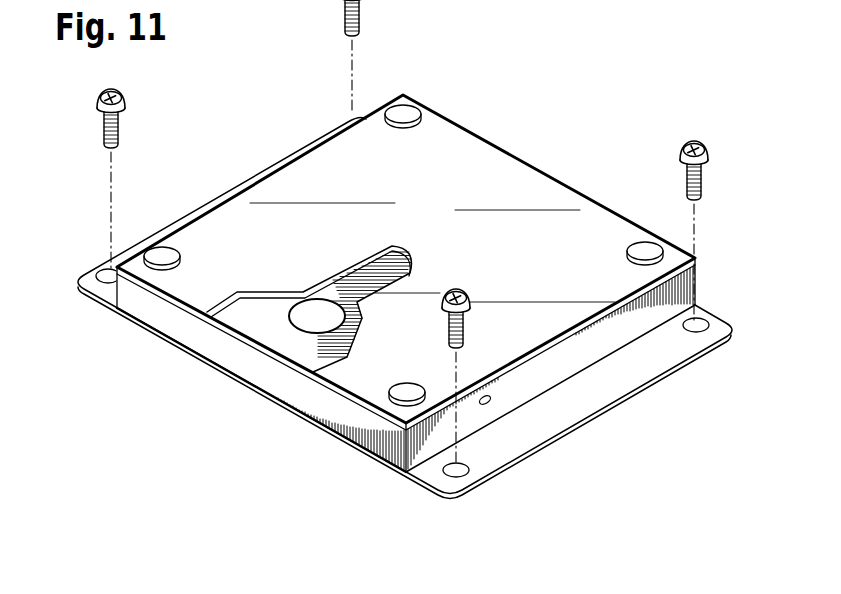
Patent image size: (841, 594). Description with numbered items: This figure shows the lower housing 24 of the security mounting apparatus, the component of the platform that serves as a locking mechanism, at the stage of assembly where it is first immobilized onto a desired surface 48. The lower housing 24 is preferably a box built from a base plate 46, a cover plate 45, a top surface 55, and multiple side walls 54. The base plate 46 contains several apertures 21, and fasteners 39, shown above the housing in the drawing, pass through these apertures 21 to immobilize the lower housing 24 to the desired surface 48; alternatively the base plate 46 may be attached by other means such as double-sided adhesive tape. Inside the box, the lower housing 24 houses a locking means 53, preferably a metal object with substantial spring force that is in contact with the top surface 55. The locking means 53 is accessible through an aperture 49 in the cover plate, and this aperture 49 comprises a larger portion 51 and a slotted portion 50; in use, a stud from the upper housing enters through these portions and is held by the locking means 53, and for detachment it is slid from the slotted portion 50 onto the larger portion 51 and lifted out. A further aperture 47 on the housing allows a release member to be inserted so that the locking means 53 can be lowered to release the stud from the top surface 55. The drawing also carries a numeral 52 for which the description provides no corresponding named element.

The lower housing 24 is at (645, 41).
The cover plate 45 is at (474, 162).
The fasteners 39 is at (703, 183).
The apertures 21 is at (703, 330).
The base plate 46 is at (606, 398).
The aperture 47 is at (490, 398).
The desired surface 48 is at (403, 486).
The aperture 49 is at (235, 349).
The slotted portion 50 is at (361, 266).
The larger portion 51 is at (237, 315).
The support surface 52 is at (289, 347).
The locking means 53 is at (270, 327).
The side walls 54 is at (143, 281).
The top surface 55 is at (145, 312).